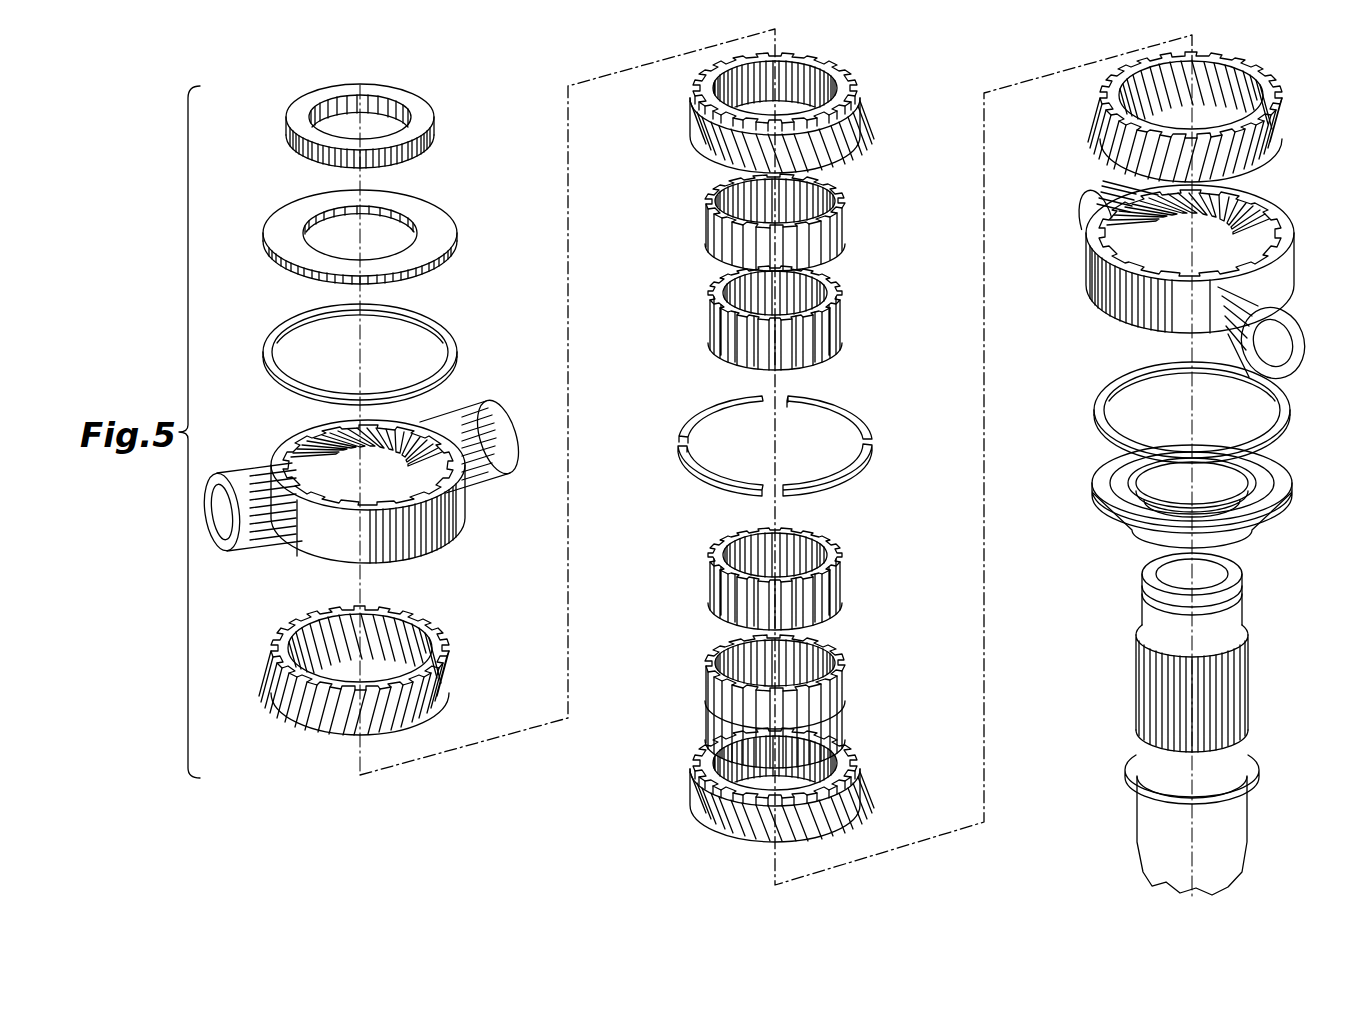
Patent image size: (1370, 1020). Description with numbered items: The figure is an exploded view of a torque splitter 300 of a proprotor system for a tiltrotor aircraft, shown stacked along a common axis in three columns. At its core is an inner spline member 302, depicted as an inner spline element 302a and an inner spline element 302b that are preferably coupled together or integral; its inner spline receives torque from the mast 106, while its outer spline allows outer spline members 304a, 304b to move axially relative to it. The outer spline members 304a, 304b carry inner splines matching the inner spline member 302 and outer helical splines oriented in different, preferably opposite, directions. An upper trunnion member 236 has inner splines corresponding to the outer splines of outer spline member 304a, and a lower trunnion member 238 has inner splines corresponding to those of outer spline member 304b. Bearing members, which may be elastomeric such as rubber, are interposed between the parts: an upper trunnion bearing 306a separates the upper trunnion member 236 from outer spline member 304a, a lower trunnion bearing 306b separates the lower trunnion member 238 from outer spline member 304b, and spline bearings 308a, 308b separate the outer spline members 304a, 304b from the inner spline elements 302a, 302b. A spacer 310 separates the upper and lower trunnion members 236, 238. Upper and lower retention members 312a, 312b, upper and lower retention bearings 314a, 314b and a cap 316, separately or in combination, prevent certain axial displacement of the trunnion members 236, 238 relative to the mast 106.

The torque splitter 300 is at (263, 72).
The cap 316 is at (422, 110).
The upper retention member 312a is at (438, 222).
The upper retention bearing 314a is at (447, 330).
The upper trunnion member 236 is at (453, 504).
The upper trunnion bearing 306a is at (447, 689).
The outer spline member 304a is at (853, 144).
The spline bearing 308a is at (826, 240).
The inner spline element 302a is at (828, 328).
The inner spline member 302 is at (835, 448).
The spacer 310 is at (857, 422).
The inner spline element 302b is at (828, 607).
The spline bearing 308b is at (825, 700).
The outer spline member 304b is at (847, 809).
The lower trunnion bearing 306b is at (1267, 148).
The lower trunnion member 238 is at (1287, 282).
The lower retention bearing 314b is at (1282, 405).
The lower retention member 312b is at (1245, 530).
The mast 106 is at (1238, 695).